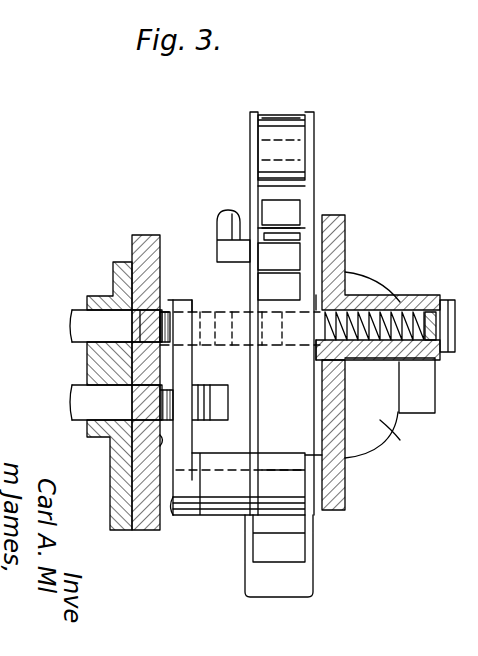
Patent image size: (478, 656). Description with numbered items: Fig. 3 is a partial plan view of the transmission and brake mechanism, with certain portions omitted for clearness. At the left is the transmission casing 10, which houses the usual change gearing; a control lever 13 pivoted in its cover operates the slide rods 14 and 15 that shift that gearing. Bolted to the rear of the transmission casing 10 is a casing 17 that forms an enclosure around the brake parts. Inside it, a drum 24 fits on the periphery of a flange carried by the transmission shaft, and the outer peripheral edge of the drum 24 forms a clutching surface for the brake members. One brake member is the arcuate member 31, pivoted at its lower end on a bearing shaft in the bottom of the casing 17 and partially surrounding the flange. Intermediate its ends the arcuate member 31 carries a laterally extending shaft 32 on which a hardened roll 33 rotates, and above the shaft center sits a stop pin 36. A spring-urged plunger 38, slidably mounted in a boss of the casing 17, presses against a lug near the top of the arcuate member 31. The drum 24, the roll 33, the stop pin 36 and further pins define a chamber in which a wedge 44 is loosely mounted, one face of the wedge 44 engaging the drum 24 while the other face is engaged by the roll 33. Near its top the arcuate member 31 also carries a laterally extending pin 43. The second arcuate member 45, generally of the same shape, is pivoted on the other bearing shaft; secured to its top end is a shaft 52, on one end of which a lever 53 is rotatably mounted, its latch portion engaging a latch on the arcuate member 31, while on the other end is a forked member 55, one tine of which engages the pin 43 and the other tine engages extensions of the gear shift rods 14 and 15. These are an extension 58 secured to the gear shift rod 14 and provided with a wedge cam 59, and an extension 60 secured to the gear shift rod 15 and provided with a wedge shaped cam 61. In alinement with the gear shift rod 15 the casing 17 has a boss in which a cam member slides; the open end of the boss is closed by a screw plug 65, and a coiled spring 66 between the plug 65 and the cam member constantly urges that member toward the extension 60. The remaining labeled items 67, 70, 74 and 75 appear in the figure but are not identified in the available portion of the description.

The transmission casing 10 is at (126, 530).
The control lever 13 is at (472, 185).
The slide rod 14 is at (82, 400).
The slide rod 15 is at (82, 335).
The casing 17 is at (345, 510).
The drum 24 is at (330, 458).
The arcuate member 31 is at (308, 197).
The laterally extending shaft 32 is at (300, 152).
The hardened roll 33 is at (283, 120).
The stop pin 36 is at (290, 232).
The plunger 38 is at (220, 226).
The pin 43 is at (212, 312).
The wedge 44 is at (268, 208).
The arcuate member 45 is at (285, 590).
The shaft 52 is at (175, 515).
The lever 53 is at (340, 442).
The forked member 55 is at (186, 437).
The extension 58 is at (133, 422).
The wedge cam 59 is at (175, 385).
The extension 60 is at (130, 318).
The wedge shaped cam 61 is at (163, 312).
The screw plug 65 is at (450, 306).
The coiled spring 66 is at (418, 362).
The spring housing 67 is at (411, 298).
The lever 70 is at (472, 209).
The link 74 is at (477, 262).
The pin 75 is at (388, 428).